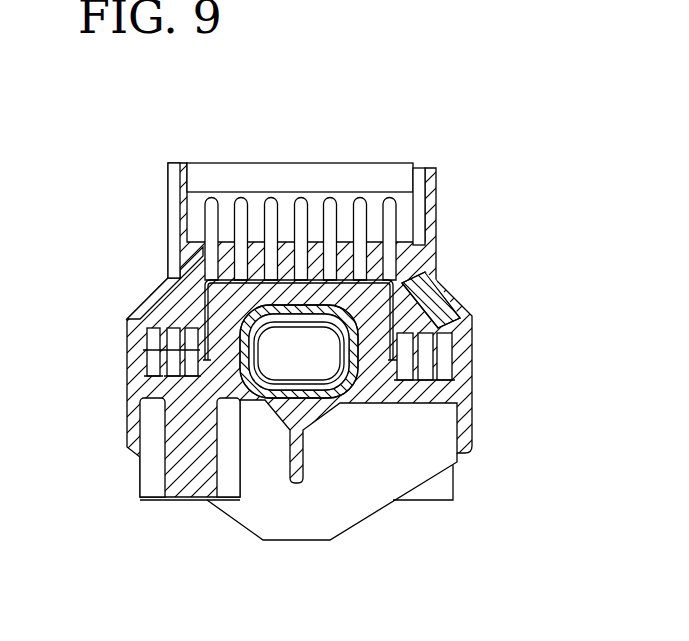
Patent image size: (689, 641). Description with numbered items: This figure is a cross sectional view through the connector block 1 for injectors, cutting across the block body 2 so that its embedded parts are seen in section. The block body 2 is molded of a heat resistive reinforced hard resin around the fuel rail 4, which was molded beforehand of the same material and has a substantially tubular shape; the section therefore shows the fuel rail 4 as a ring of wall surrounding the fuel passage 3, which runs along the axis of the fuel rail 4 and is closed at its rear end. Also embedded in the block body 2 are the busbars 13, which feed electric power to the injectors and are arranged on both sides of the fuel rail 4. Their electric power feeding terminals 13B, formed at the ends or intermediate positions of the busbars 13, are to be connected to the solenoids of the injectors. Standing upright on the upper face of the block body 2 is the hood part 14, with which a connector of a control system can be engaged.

The connector block 1 is at (472, 247).
The block body 2 is at (458, 320).
The fuel passage 3 is at (288, 357).
The fuel rail 4 is at (316, 373).
The busbars 13 is at (205, 332).
The electric power feeding terminals 13B is at (268, 208).
The hood part 14 is at (169, 204).